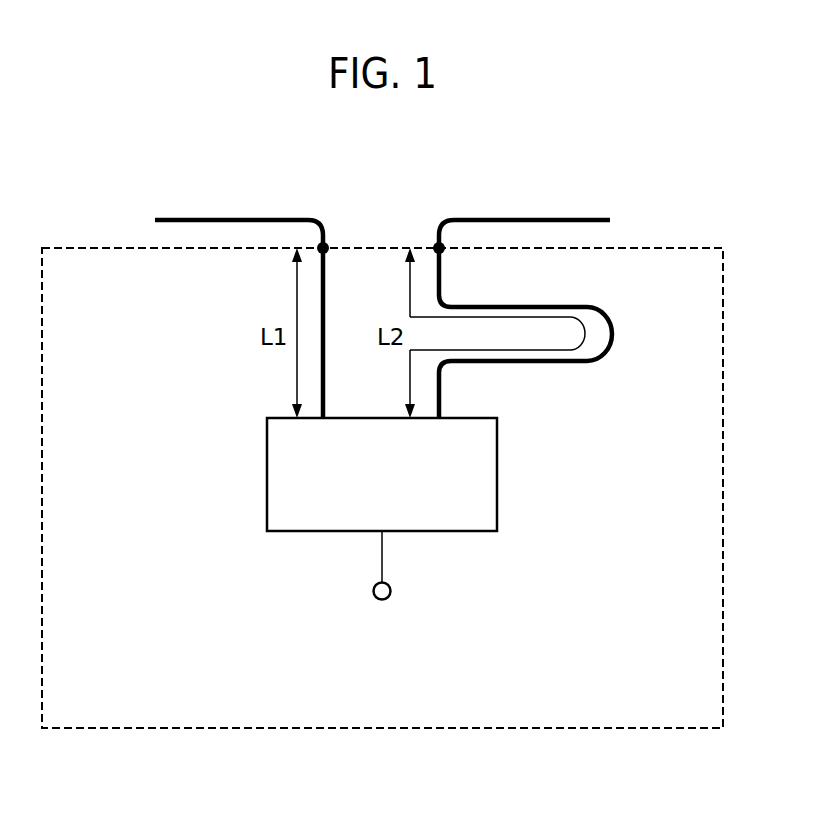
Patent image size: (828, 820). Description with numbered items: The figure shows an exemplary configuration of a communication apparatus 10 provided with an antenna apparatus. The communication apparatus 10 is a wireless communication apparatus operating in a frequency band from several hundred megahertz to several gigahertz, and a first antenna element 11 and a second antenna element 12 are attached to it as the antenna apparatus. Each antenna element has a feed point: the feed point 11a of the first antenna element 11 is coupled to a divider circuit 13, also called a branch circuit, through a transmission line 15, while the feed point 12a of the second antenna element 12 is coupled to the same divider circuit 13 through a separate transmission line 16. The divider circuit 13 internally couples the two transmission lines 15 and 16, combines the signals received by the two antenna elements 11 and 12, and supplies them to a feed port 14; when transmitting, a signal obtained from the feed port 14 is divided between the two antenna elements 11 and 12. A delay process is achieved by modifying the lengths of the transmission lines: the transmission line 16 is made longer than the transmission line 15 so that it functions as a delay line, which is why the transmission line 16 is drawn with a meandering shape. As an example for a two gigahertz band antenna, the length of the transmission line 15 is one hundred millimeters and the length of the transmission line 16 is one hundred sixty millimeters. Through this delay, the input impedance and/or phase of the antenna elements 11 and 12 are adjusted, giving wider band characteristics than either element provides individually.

The communication apparatus 10 is at (495, 729).
The first antenna element 11 is at (245, 220).
The feed point 11a is at (326, 246).
The second antenna element 12 is at (535, 220).
The feed point 12a is at (443, 252).
The divider circuit 13 is at (497, 478).
The feed port 14 is at (382, 600).
The transmission line 15 is at (323, 377).
The transmission line 16 is at (538, 365).